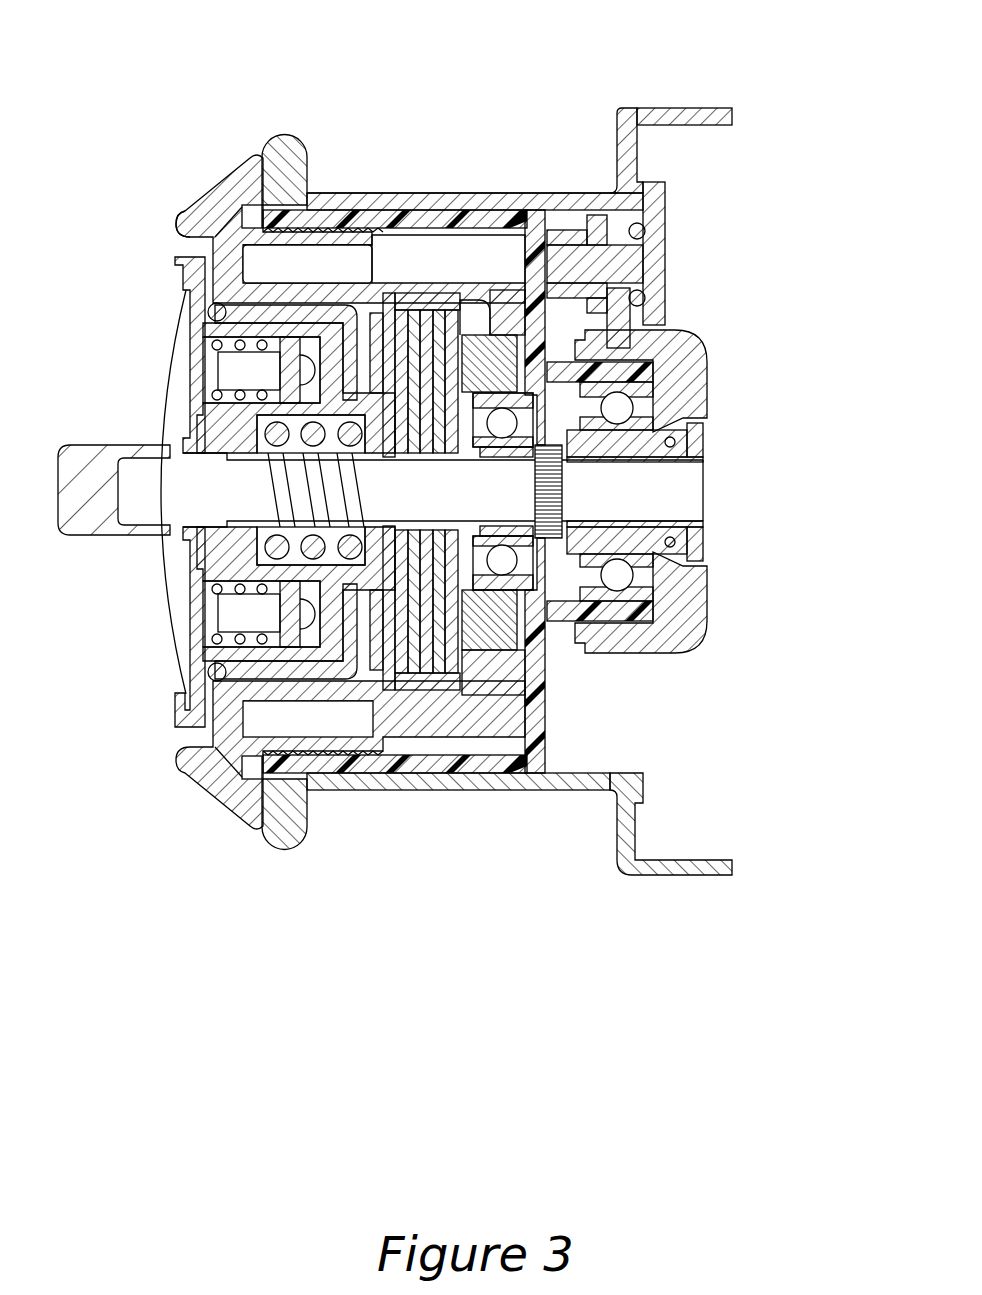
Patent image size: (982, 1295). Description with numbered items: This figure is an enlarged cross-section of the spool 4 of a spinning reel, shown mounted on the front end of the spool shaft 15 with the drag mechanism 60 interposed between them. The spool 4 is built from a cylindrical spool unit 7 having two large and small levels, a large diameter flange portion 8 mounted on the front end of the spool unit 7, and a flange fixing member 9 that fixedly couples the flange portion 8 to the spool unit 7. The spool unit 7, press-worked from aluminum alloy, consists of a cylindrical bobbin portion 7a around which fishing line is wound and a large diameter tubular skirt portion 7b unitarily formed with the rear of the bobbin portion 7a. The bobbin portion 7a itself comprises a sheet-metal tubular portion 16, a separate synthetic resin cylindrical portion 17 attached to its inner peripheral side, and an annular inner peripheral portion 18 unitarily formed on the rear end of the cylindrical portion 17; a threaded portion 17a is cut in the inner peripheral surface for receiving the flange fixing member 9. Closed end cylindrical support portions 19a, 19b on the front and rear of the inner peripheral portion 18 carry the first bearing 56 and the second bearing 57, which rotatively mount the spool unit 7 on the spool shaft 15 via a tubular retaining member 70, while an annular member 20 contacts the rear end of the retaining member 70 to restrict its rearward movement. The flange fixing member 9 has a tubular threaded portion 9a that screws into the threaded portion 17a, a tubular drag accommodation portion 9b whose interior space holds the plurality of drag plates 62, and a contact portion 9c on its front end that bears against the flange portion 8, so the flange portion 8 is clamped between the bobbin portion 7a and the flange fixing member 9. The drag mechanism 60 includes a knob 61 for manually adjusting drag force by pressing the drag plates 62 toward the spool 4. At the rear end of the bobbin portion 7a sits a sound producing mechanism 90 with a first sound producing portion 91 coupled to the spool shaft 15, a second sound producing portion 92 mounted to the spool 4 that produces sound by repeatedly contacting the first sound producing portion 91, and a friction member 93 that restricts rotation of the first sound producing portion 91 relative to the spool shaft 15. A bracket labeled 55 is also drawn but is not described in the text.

The spool 4 is at (430, 128).
The spool unit 7 is at (470, 190).
The bobbin portion 7a is at (546, 190).
The skirt portion 7b is at (700, 118).
The flange portion 8 is at (283, 148).
The flange fixing member 9 is at (332, 454).
The threaded portion 9a is at (292, 240).
The drag accommodation portion 9b is at (324, 298).
The contact portion 9c is at (198, 212).
The spool shaft 15 is at (617, 505).
The tubular portion 16 is at (370, 192).
The cylindrical portion 17 is at (466, 300).
The threaded portion 17a is at (419, 294).
The inner peripheral portion 18 is at (502, 254).
The support portion 19a is at (488, 585).
The support portion 19b is at (622, 580).
The annular member 20 is at (700, 437).
The bottom bracket 55 is at (548, 855).
The first bearing 56 is at (505, 565).
The second bearing 57 is at (627, 642).
The drag mechanism 60 is at (337, 683).
The knob 61 is at (185, 665).
The drag plates 62 is at (410, 686).
The retaining member 70 is at (560, 594).
The sound producing mechanism 90 is at (714, 335).
The first sound producing portion 91 is at (700, 378).
The second sound producing portion 92 is at (643, 267).
The friction member 93 is at (727, 545).